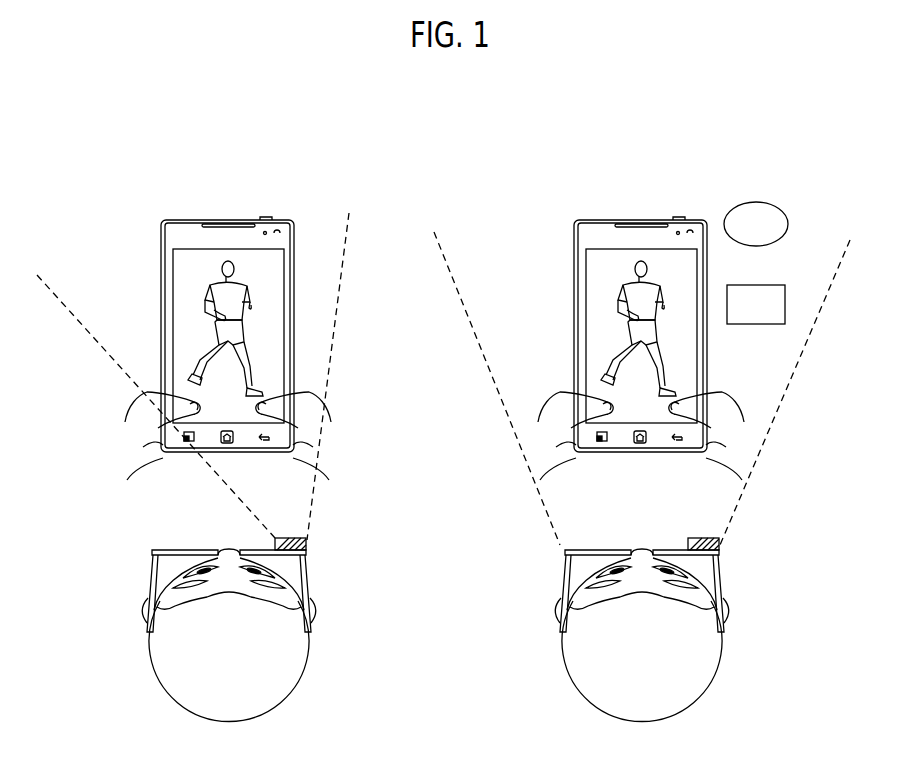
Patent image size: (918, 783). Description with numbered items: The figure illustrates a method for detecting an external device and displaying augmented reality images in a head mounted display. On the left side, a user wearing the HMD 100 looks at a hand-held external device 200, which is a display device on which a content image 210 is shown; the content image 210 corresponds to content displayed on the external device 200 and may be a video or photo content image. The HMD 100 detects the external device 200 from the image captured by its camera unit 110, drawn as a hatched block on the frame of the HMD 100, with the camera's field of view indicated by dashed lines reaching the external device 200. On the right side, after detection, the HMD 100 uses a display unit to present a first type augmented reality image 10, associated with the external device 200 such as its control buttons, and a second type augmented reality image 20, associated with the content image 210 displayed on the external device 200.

The first type augmented reality image 10 is at (748, 208).
The second type augmented reality image 20 is at (748, 288).
The head mounted display (HMD) 100 is at (150, 565).
The camera unit 110 is at (306, 542).
The external device 200 is at (189, 220).
The content image 210 is at (214, 288).